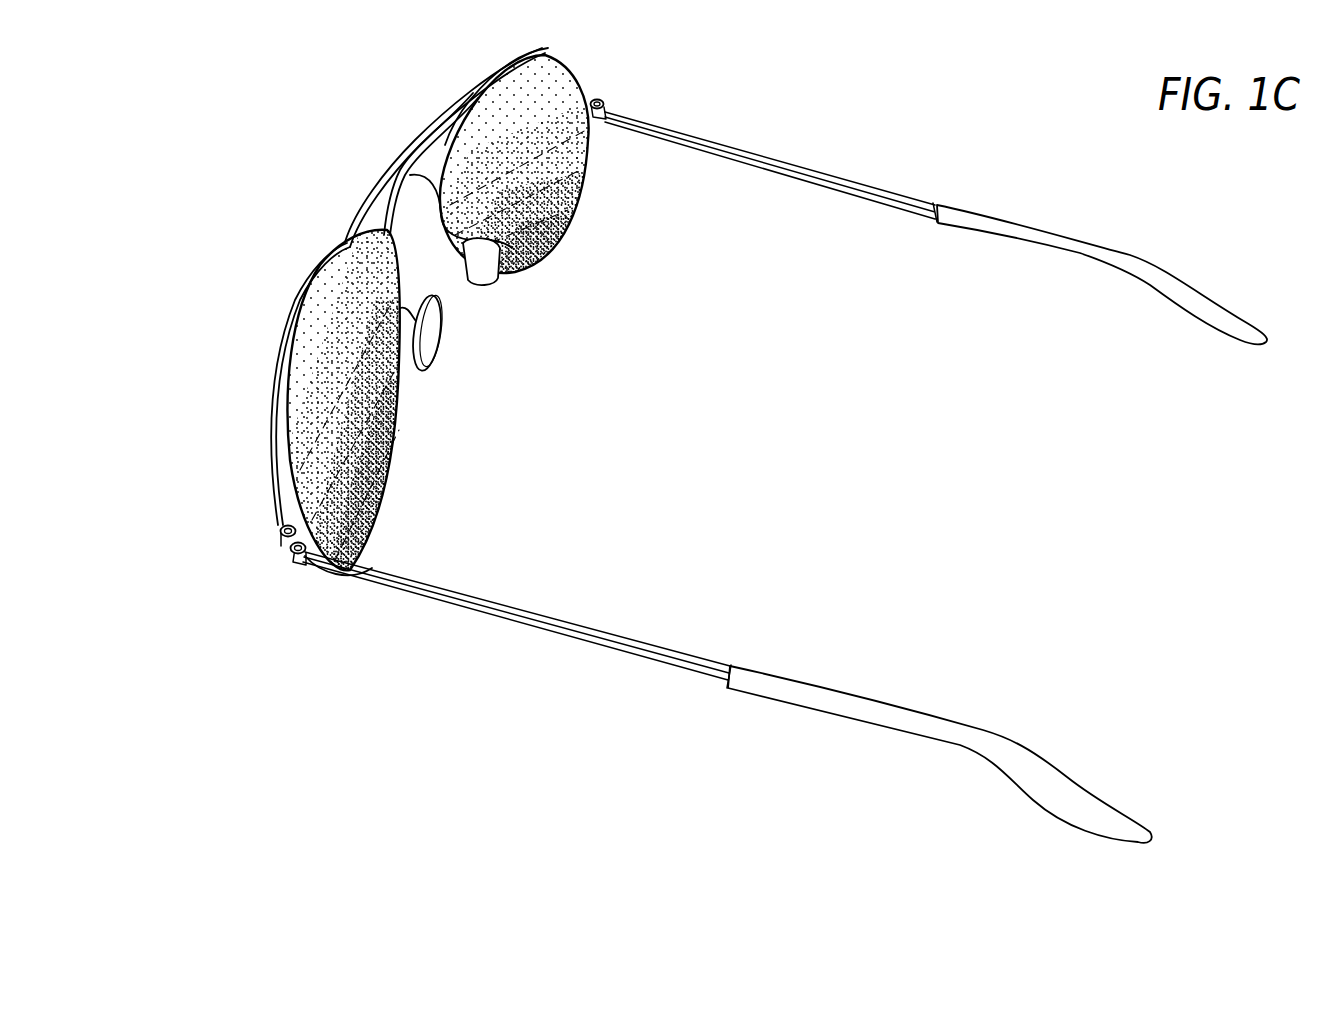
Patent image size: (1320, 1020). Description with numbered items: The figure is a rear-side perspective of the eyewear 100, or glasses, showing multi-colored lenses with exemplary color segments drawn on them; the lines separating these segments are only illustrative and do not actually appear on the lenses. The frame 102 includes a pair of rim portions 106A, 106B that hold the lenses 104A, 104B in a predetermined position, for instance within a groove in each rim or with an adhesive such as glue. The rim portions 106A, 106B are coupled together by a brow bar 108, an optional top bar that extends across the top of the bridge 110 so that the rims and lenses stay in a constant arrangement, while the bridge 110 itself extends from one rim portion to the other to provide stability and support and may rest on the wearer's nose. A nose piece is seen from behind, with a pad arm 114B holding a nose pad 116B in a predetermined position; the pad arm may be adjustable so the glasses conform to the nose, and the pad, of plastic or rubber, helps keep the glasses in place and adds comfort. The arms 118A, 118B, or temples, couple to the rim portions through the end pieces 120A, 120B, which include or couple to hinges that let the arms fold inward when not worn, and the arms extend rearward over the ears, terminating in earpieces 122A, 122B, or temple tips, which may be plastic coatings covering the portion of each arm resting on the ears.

The eyewear 100 is at (223, 259).
The frame 102 is at (252, 355).
The lens 104A is at (582, 208).
The lens 104B is at (370, 515).
The rim portion 106A is at (573, 235).
The rim portion 106B is at (387, 473).
The brow bar 108 is at (372, 198).
The bridge 110 is at (407, 167).
The pad arm 114B is at (483, 270).
The nose pad 116B is at (490, 240).
The arm 118A is at (895, 195).
The arm 118B is at (607, 648).
The end piece 120A is at (603, 102).
The end piece 120B is at (283, 551).
The earpiece 122A is at (1193, 312).
The earpiece 122B is at (843, 717).